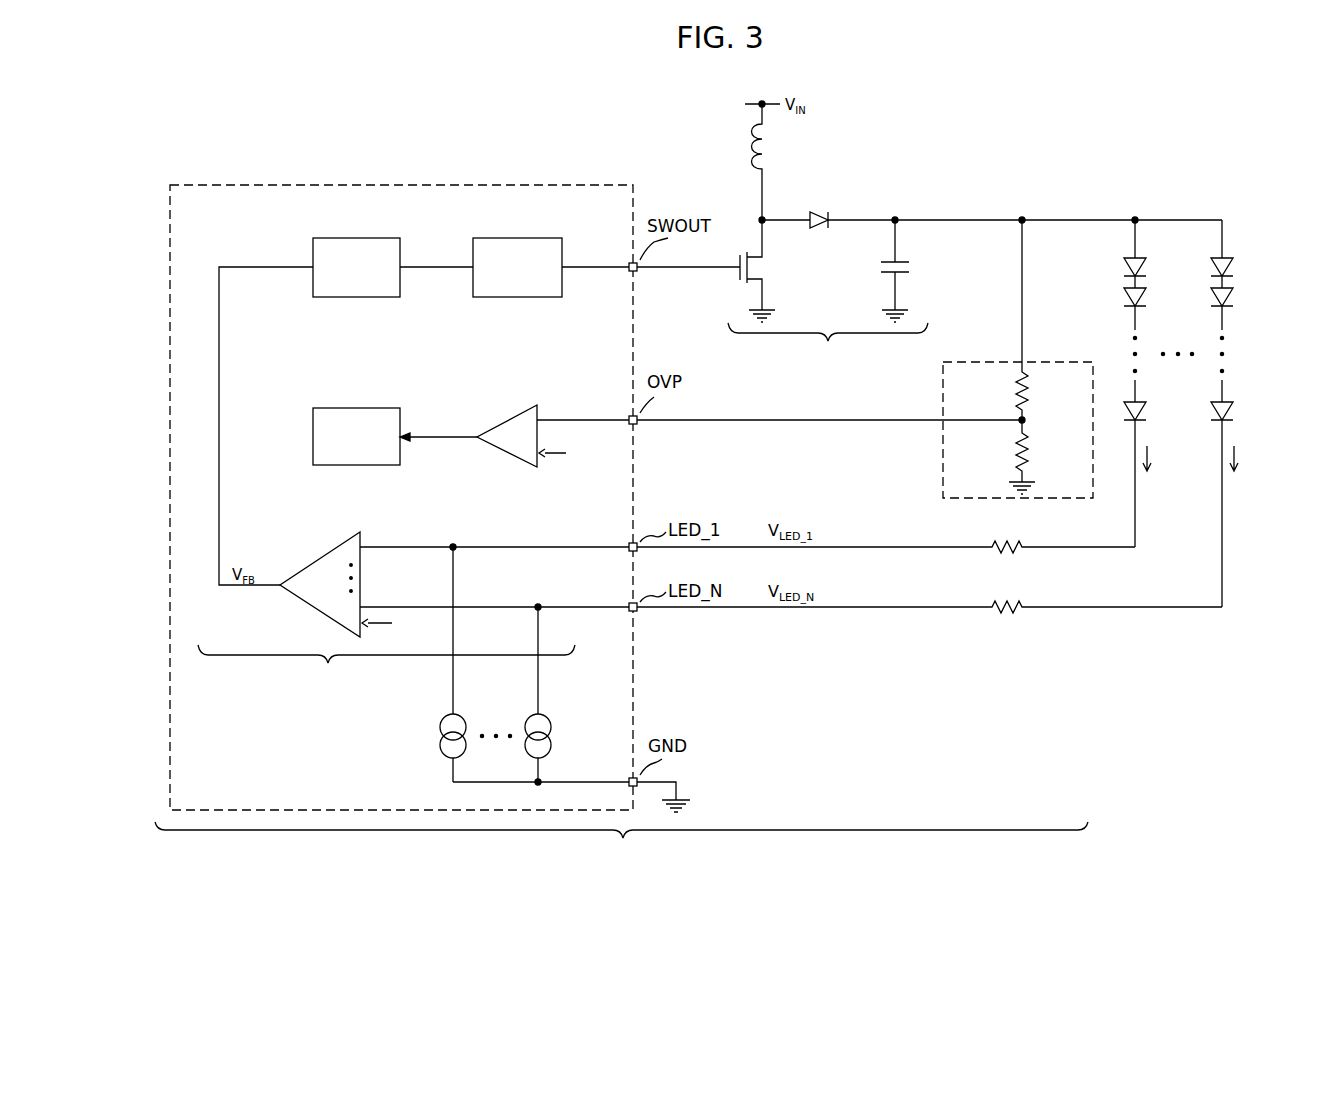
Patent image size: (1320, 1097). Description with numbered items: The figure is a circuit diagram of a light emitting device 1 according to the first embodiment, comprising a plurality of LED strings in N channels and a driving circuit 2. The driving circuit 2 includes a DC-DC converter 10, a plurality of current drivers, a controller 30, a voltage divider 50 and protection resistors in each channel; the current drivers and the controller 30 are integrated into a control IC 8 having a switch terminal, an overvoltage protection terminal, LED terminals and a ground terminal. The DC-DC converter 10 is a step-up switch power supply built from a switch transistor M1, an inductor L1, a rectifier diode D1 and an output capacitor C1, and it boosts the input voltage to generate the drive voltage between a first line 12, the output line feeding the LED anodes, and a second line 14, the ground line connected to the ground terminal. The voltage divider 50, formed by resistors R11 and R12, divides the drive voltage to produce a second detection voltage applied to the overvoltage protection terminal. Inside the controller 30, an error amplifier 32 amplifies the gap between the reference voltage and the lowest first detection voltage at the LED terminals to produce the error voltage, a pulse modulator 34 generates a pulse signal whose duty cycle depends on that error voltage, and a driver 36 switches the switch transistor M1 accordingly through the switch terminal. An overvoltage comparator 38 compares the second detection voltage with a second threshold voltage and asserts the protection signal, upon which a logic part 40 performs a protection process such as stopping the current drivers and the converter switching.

The light emitting device 1 is at (1174, 86).
The driving circuit 2 is at (621, 843).
The control IC 8 is at (470, 184).
The DC-DC converter 10 is at (828, 344).
The first line 12 is at (1063, 220).
The second line 14 is at (690, 784).
The controller 30 is at (386, 665).
The error amplifier 32 is at (303, 562).
The pulse modulator 34 is at (370, 237).
The driver 36 is at (525, 237).
The OVP comparator 38 is at (505, 417).
The logic part 40 is at (370, 407).
The voltage divider 50 is at (990, 359).
The inductor L1 is at (774, 148).
The rectifier diode D1 is at (822, 200).
The switch transistor M1 is at (768, 262).
The output capacitor C1 is at (880, 273).
The resistor R11 is at (1006, 395).
The resistor R12 is at (1006, 455).